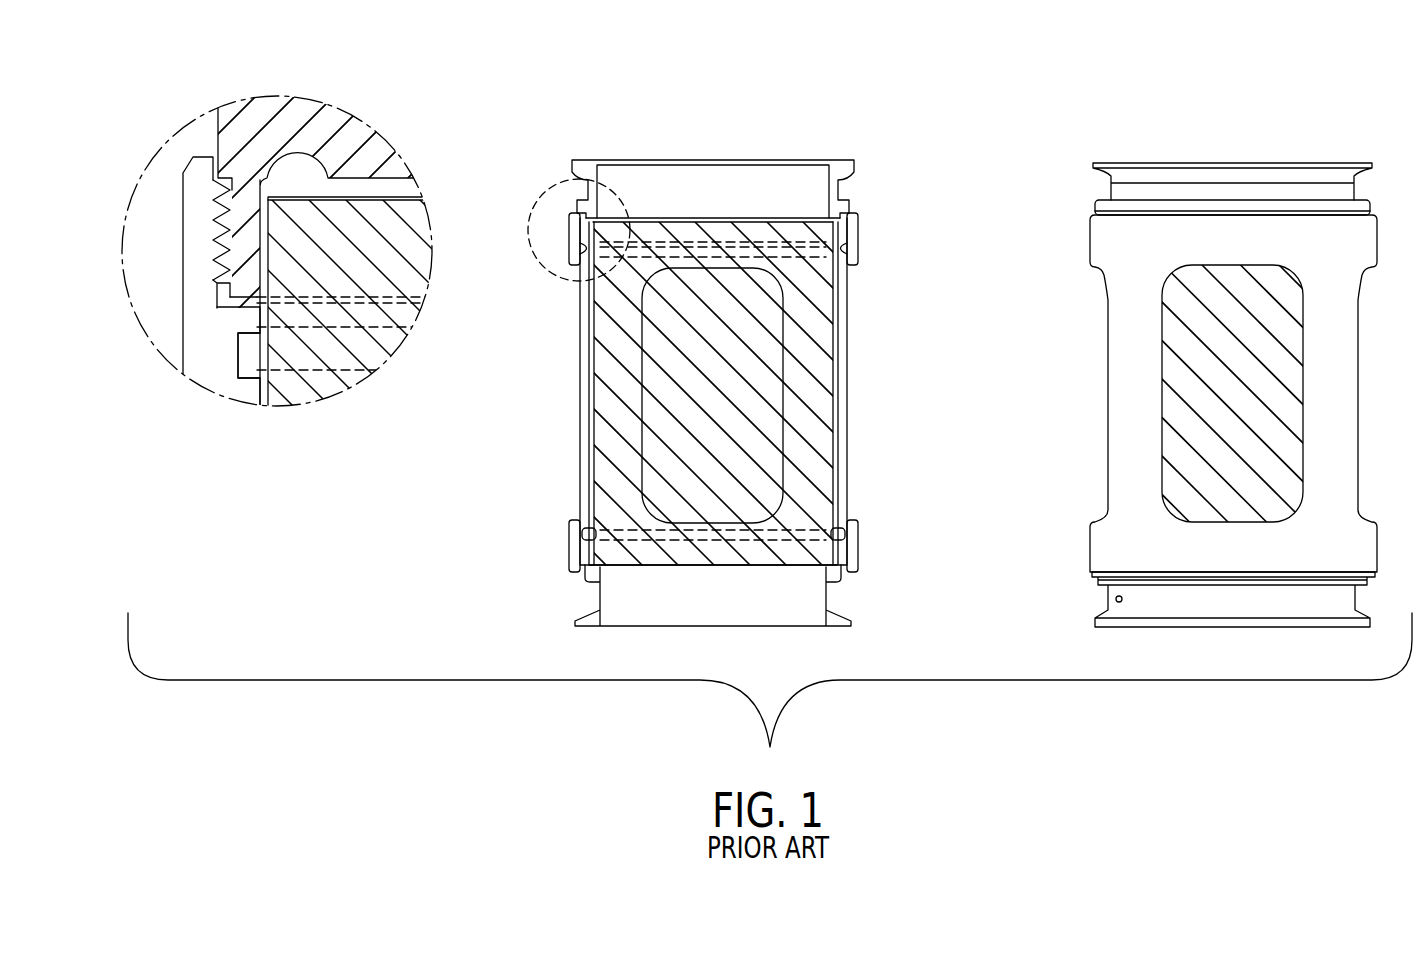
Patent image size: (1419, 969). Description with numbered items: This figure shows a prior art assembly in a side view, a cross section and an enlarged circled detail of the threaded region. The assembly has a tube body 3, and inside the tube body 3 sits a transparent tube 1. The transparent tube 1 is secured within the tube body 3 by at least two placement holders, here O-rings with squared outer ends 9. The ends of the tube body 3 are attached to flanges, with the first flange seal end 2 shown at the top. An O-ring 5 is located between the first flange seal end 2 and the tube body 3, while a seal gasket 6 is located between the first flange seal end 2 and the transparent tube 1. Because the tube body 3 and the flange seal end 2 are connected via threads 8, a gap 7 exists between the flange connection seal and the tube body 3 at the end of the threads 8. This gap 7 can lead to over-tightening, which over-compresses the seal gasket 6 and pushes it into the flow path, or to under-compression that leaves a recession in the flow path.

The transparent tube 1 is at (415, 212).
The first flange seal end 2 is at (252, 140).
The tube body 3 is at (192, 238).
The O-ring 5 is at (237, 368).
The seal gasket 6 is at (293, 168).
The gap 7 is at (262, 306).
The threads 8 is at (225, 217).
The O-ring with squared outer ends 9 is at (235, 378).